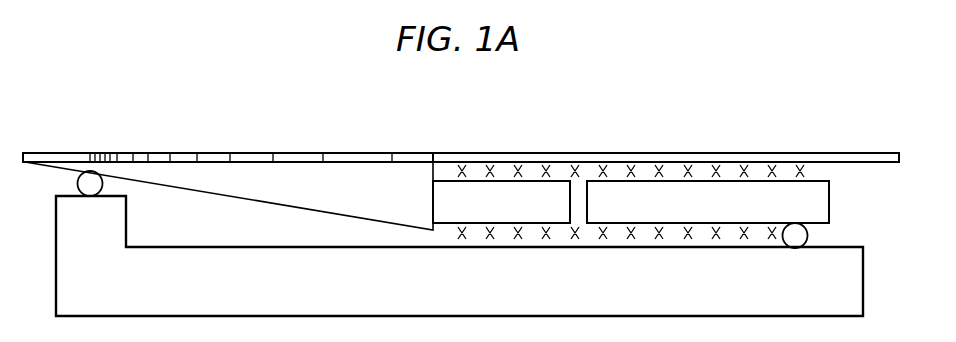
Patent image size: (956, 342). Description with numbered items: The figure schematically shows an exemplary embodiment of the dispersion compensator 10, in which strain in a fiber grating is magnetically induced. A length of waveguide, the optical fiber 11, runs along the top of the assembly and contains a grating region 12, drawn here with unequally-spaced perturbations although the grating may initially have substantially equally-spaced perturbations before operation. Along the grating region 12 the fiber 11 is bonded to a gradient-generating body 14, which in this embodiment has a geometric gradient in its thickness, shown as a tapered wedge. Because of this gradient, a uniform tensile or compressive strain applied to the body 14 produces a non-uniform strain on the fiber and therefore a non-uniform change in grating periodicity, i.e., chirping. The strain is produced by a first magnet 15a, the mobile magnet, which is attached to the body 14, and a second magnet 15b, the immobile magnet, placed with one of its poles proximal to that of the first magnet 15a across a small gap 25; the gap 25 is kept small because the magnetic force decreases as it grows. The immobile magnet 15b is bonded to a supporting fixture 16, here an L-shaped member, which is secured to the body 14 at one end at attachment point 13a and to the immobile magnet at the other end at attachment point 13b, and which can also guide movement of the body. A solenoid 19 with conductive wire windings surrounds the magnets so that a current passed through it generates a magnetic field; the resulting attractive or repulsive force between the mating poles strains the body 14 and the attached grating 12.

The dispersion compensator 10 is at (724, 70).
The optical fiber 11 is at (805, 160).
The grating region 12 is at (181, 153).
The attachment point 13a is at (78, 188).
The attachment point 13b is at (808, 241).
The gradient-generating body 14 is at (410, 168).
The first magnet 15a is at (507, 212).
The second magnet 15b is at (672, 212).
The supporting fixture 16 is at (852, 290).
The solenoid 19 is at (638, 172).
The gap 25 is at (578, 187).